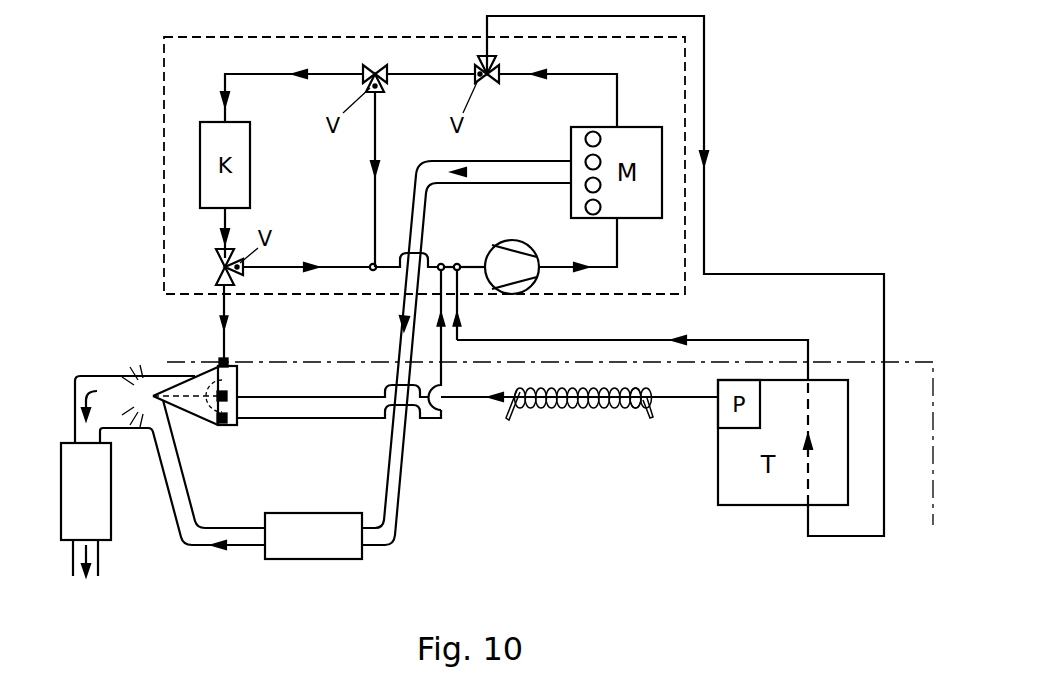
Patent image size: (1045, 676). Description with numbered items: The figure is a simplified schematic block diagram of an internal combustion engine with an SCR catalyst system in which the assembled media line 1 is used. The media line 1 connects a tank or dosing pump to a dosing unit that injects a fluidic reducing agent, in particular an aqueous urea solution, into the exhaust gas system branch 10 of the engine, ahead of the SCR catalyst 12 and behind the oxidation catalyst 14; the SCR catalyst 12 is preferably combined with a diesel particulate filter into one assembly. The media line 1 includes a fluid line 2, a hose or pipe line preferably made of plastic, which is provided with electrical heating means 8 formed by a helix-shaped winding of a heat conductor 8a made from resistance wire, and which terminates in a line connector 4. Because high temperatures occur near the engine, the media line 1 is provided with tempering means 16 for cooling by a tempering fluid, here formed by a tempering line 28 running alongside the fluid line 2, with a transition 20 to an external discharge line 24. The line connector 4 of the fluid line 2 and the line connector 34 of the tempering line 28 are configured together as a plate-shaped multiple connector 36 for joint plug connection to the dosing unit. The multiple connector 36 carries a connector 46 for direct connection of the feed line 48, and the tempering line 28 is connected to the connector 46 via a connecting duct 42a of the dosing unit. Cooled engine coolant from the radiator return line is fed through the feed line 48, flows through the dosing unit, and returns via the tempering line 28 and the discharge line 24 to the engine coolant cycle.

The media line 1 is at (527, 470).
The fluid line 2 is at (468, 399).
The line connector 4 is at (229, 396).
The electrical heating means 8 is at (593, 430).
The heat conductor 8a is at (633, 405).
The exhaust gas system branch 10 is at (391, 518).
The SCR catalyst 12 is at (116, 546).
The oxidation catalyst 14 is at (298, 565).
The tempering means 16 is at (306, 430).
The transition 20 is at (442, 432).
The external discharge line 24 is at (443, 355).
The tempering line 28 is at (348, 420).
The line connector 34 is at (228, 424).
The multiple connector 36 is at (245, 375).
The connecting duct 42a is at (205, 418).
The connector 46 is at (226, 362).
The feed line 48 is at (222, 304).